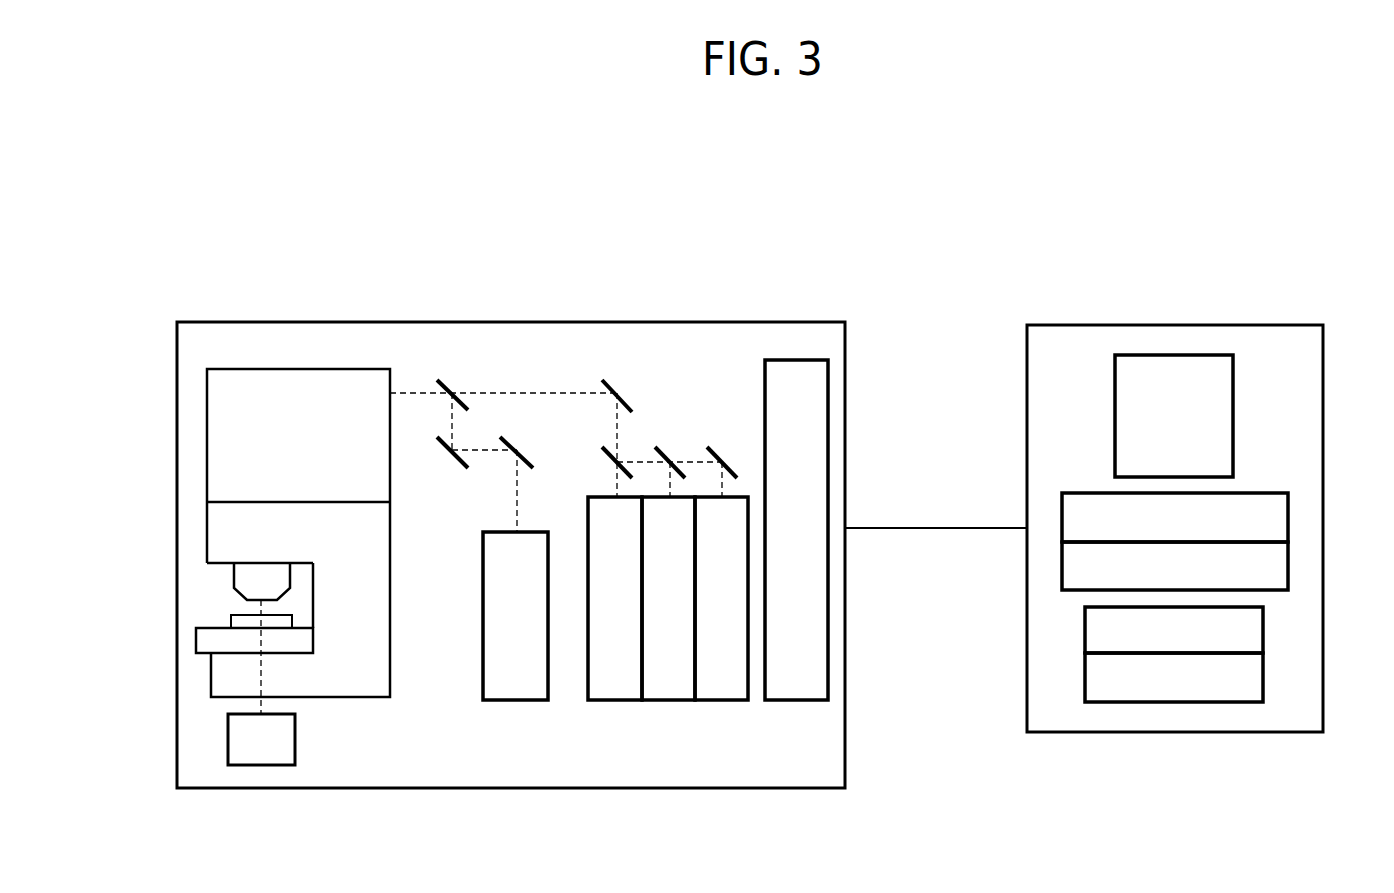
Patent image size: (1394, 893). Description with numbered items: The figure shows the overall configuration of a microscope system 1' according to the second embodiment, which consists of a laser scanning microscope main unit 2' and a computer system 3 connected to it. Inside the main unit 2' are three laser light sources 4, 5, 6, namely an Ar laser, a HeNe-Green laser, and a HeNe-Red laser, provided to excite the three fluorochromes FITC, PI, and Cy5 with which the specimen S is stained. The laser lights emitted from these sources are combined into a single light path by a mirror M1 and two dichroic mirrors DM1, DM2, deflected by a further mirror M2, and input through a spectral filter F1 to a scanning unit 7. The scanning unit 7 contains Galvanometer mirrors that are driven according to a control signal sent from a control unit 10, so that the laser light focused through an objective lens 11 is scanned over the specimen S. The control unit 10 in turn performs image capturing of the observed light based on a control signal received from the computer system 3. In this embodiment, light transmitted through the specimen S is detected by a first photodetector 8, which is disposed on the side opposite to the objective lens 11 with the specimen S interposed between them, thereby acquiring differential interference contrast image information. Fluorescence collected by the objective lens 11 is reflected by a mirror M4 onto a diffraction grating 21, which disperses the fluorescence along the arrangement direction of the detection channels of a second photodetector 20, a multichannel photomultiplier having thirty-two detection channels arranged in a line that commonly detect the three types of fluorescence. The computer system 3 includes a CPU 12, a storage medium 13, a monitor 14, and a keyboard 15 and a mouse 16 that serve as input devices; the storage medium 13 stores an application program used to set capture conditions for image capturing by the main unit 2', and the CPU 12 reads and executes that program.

The microscope system 1' is at (857, 177).
The main unit 2' is at (511, 513).
The computer system 3 is at (1095, 325).
The laser light source 4 is at (615, 700).
The laser light source 5 is at (668, 700).
The laser light source 6 is at (722, 700).
The scanning unit 7 is at (207, 410).
The first photodetector 8 is at (261, 765).
The control unit 10 is at (796, 360).
The objective lens 11 is at (263, 575).
The CPU 12 is at (1288, 520).
The storage medium 13 is at (1288, 565).
The monitor 14 is at (1233, 415).
The keyboard 15 is at (1263, 630).
The mouse 16 is at (1263, 678).
The second photodetector 20 is at (515, 700).
The diffraction grating 21 is at (505, 440).
The spectral filter F1 is at (447, 385).
The mirror M1 is at (727, 468).
The mirror M2 is at (610, 384).
The mirror M4 is at (442, 452).
The dichroic mirror DM1 is at (672, 463).
The dichroic mirror DM2 is at (603, 448).
The specimen S is at (240, 622).